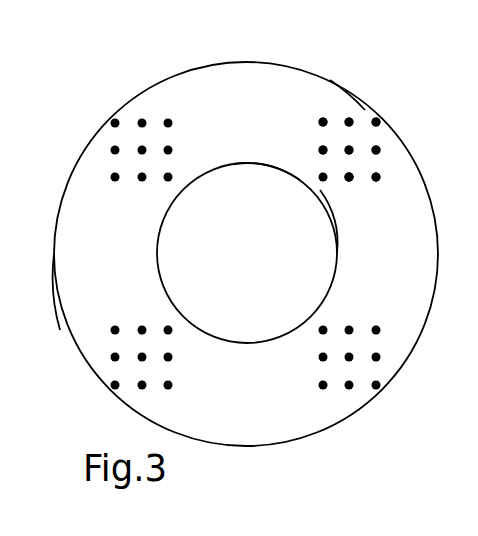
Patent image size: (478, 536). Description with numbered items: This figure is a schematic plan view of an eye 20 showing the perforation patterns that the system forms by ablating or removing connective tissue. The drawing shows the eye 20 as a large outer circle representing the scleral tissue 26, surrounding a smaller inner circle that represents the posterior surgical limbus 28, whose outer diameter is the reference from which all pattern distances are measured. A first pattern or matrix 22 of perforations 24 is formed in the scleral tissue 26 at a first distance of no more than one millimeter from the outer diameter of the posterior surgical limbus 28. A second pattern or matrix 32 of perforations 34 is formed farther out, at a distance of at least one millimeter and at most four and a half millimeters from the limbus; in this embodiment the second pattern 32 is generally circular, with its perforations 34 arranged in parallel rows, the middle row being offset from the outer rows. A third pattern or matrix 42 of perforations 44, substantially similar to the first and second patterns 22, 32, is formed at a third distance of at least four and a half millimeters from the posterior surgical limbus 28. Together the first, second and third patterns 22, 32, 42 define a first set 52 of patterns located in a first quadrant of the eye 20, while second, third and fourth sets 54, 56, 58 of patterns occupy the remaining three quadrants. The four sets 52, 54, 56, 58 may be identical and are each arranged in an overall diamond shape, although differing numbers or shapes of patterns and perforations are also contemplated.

The eye 20 is at (178, 56).
The first pattern or matrix 22 is at (306, 172).
The perforations 24 is at (318, 176).
The scleral tissue 26 is at (97, 280).
The posterior surgical limbus 28 is at (337, 269).
The second pattern or matrix 32 is at (366, 198).
The perforations 34 is at (346, 149).
The third pattern or matrix 42 is at (350, 103).
The perforations 44 is at (379, 119).
The first set of patterns or matrices 52 is at (302, 112).
The second set of patterns or matrices 54 is at (342, 403).
The third set of patterns or matrices 56 is at (182, 366).
The fourth set of patterns or matrices 58 is at (134, 192).